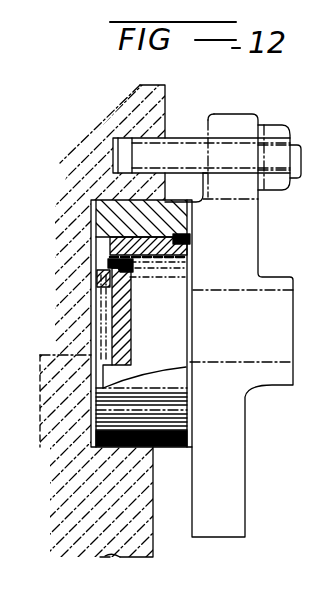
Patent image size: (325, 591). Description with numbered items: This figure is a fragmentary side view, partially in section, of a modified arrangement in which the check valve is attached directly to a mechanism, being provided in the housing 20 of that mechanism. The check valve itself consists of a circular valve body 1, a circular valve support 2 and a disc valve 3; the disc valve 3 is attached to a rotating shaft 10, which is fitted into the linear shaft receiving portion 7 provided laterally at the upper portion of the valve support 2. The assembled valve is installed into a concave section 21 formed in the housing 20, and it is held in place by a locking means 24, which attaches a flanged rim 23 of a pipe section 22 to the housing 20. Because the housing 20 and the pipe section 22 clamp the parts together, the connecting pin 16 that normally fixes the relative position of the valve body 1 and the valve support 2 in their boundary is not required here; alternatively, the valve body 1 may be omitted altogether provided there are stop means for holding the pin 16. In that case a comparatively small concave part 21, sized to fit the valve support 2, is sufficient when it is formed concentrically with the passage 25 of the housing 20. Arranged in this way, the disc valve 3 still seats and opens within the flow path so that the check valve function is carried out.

The valve body 1 is at (112, 202).
The valve support 2 is at (190, 256).
The disc valve 3 is at (127, 333).
The shaft receiving portion 7 is at (108, 262).
The rotating shaft 10 is at (110, 268).
The stopper 16 is at (190, 237).
The housing 20 is at (150, 508).
The concave section 21 is at (90, 231).
The pipe section 22 is at (278, 386).
The flanged rim 23 is at (258, 200).
The locking means 24 is at (185, 137).
The passage 25 is at (60, 355).